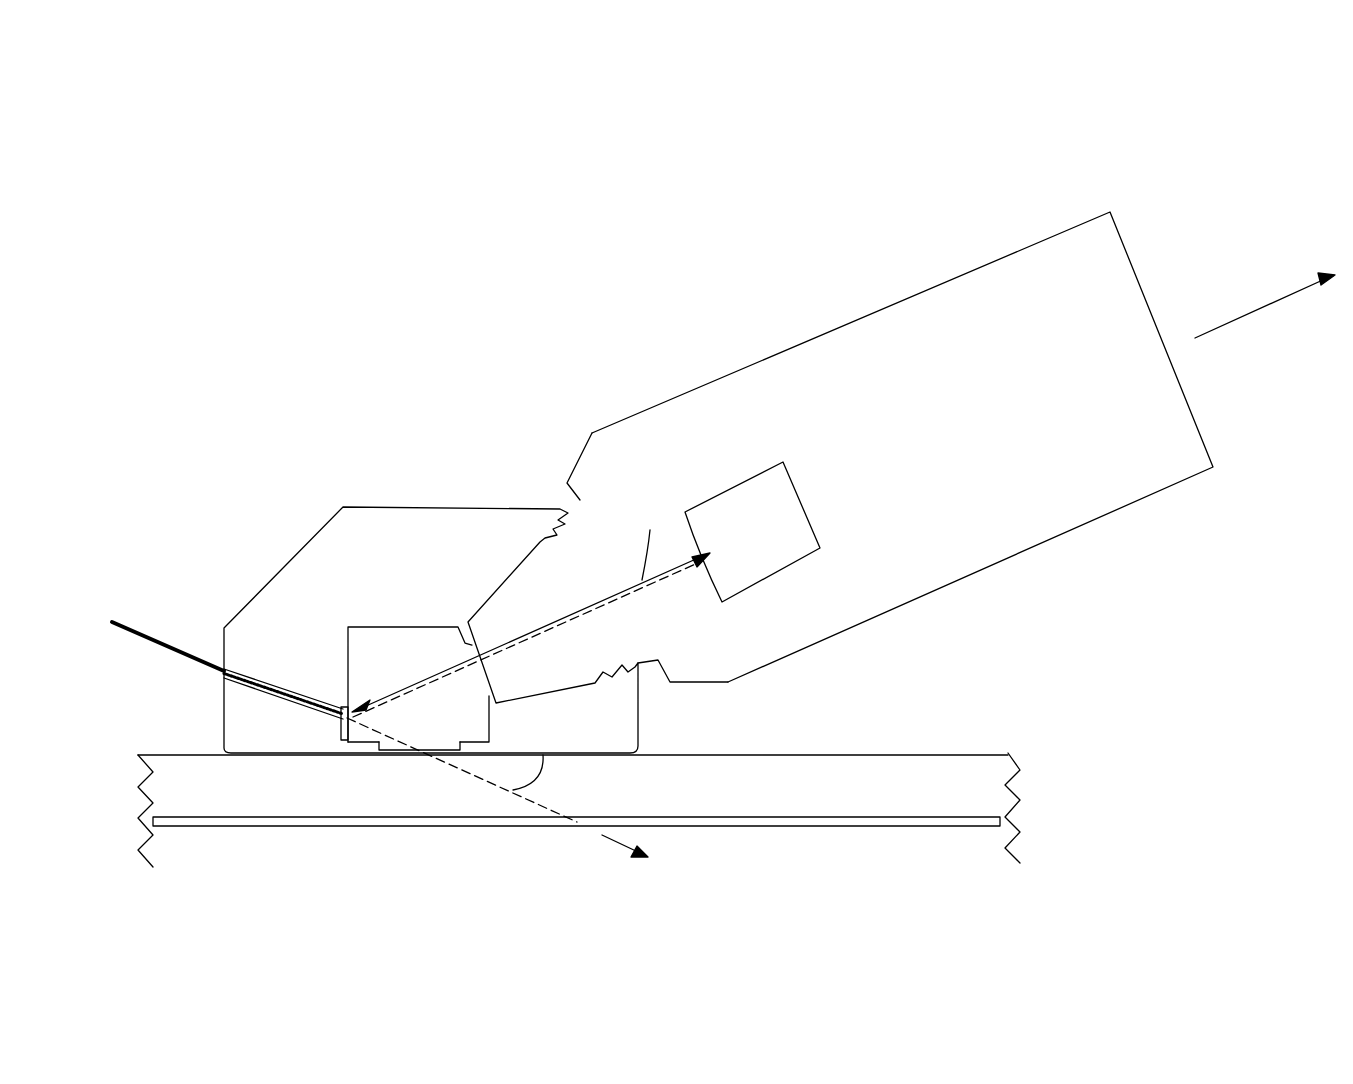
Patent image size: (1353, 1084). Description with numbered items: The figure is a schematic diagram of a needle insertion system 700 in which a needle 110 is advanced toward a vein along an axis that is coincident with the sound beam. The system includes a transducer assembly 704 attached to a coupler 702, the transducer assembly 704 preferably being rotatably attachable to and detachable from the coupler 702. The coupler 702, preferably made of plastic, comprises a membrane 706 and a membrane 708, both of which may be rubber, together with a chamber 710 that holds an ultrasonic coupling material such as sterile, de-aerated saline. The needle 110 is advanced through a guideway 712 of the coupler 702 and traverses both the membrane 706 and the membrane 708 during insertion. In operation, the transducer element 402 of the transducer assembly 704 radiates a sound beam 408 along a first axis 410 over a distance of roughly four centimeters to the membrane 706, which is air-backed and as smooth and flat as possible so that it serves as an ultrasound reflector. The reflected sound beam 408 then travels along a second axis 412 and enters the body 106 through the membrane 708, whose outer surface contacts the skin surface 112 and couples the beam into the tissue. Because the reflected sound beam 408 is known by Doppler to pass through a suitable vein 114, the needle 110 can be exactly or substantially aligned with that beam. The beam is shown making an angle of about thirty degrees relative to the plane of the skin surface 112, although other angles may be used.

The needle insertion system 700 is at (1182, 148).
The coupler 702 is at (448, 505).
The transducer assembly 704 is at (920, 290).
The membrane 706 is at (344, 710).
The membrane 708 is at (418, 745).
The chamber 710 is at (430, 626).
The guideway 712 is at (291, 706).
The needle 110 is at (180, 652).
The sound beam 408 is at (618, 592).
The transducer element 402 is at (752, 532).
The first axis 410 is at (1283, 297).
The second axis 412 is at (627, 848).
The body 106 is at (1033, 715).
The skin surface 112 is at (850, 753).
The vein 114 is at (790, 826).